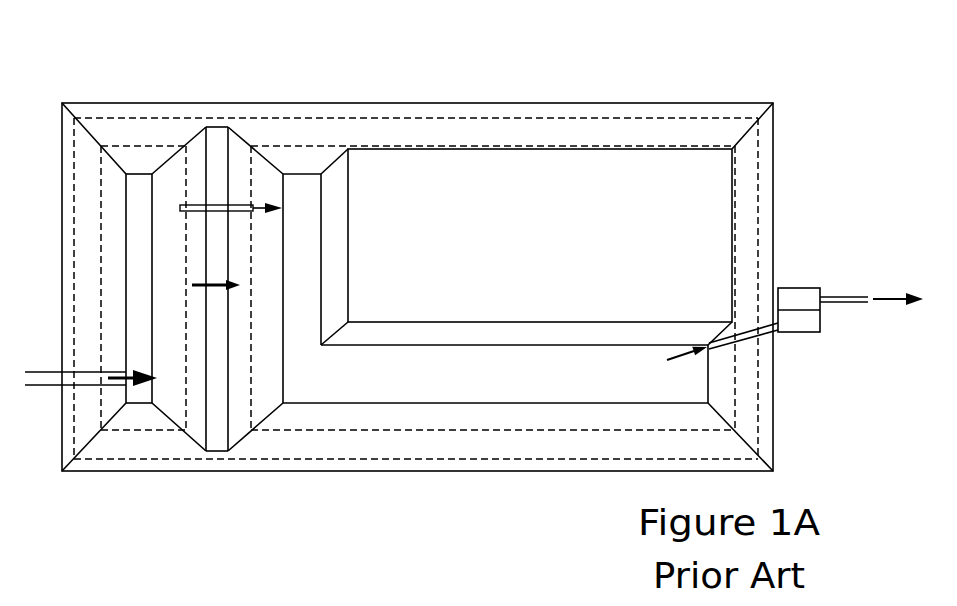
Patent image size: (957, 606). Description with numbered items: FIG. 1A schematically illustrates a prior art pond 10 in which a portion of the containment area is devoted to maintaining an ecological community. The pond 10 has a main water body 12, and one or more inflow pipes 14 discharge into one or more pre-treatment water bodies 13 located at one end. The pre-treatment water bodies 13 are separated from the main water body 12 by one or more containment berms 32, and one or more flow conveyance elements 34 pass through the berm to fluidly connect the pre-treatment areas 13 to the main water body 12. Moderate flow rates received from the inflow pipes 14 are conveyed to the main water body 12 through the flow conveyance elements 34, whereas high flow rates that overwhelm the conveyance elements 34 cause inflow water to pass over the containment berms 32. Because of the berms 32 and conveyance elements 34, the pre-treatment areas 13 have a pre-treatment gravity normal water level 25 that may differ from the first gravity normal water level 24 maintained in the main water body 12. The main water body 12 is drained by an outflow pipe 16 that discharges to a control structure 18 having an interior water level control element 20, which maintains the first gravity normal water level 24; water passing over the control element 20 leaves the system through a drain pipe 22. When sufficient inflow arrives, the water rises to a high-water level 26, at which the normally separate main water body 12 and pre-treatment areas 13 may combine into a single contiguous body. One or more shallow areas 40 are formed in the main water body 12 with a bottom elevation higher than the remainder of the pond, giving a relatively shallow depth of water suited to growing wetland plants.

The pond 10 is at (345, 53).
The main water body 12 is at (312, 378).
The pre-treatment water body 13 is at (149, 306).
The inflow pipe 14 is at (45, 372).
The outflow pipe 16 is at (752, 340).
The control structure 18 is at (792, 288).
The water level control element 20 is at (798, 308).
The drain pipe 22 is at (855, 297).
The first gravity normal water level 24 is at (275, 146).
The pre-treatment gravity normal water level 25 is at (129, 146).
The high-water level 26 is at (465, 118).
The containment berm 32 is at (216, 157).
The flow conveyance element 34 is at (196, 207).
The shallow area 40 is at (572, 225).